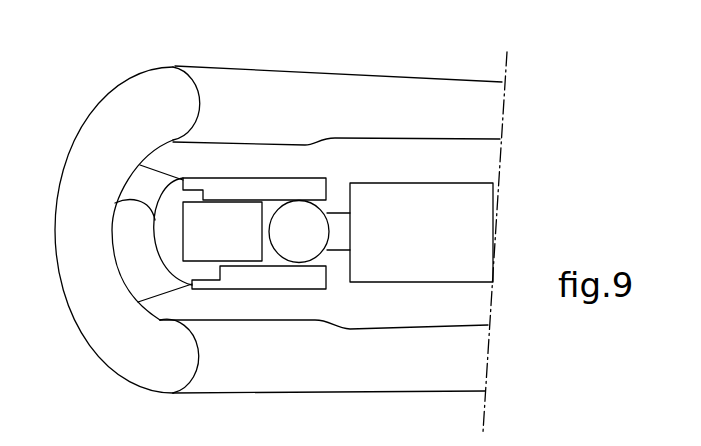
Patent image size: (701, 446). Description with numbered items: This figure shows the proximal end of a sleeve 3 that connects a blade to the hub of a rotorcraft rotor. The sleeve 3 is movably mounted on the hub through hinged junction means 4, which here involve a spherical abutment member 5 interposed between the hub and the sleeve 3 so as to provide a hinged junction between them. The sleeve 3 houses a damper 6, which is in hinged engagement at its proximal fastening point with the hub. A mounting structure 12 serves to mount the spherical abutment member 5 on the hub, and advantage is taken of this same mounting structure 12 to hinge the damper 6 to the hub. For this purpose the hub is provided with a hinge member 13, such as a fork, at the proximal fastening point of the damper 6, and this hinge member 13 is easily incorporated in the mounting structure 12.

The sleeve 3 is at (330, 71).
The hinged junction means 4 is at (138, 240).
The spherical abutment member 5 is at (115, 203).
The damper 6 is at (420, 239).
The mounting structure 12 is at (272, 290).
The hinge member 13 is at (312, 172).